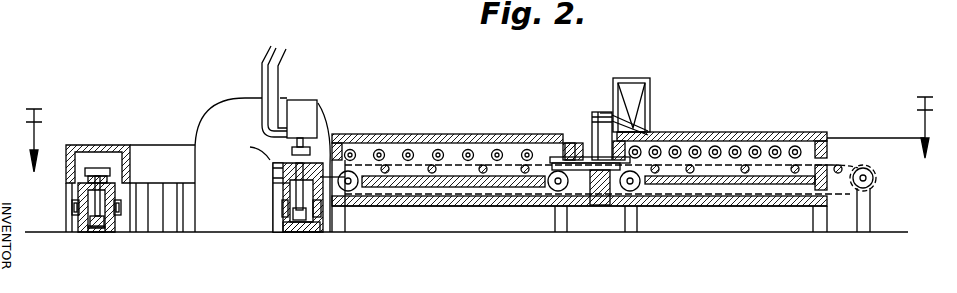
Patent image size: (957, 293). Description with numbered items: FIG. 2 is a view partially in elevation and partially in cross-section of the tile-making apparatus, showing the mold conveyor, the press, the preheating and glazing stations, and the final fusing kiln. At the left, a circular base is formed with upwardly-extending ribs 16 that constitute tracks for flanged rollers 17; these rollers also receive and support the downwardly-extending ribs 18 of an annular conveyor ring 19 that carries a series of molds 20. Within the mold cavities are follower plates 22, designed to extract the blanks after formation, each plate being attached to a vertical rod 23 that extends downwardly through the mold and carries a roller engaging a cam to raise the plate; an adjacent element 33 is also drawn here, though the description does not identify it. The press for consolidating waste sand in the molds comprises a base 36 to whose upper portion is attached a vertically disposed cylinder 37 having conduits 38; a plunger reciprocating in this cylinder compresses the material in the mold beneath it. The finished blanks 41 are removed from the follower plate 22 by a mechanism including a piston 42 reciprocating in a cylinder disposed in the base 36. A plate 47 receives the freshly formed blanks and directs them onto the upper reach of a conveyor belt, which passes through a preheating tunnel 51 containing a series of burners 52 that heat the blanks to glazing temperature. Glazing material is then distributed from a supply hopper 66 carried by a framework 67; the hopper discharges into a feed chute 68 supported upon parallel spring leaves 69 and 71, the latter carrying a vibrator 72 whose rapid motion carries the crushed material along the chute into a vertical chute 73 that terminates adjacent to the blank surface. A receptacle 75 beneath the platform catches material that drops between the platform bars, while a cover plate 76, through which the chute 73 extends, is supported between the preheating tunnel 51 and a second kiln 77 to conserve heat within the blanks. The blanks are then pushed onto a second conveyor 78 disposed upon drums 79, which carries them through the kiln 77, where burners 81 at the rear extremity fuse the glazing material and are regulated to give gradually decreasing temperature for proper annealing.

The upwardly-extending ribs 16 is at (280, 230).
The flanged rollers 17 is at (117, 213).
The downwardly-extending ribs 18 is at (83, 200).
The annular conveyor ring 19 is at (272, 183).
The molds 20 is at (112, 180).
The follower plates 22 is at (98, 180).
The vertical rod 23 is at (97, 233).
The housing 33 is at (78, 145).
The base 36 is at (212, 215).
The cylinder 37 is at (312, 108).
The conduits 38 is at (272, 82).
The blanks 41 is at (457, 166).
The piston 42 is at (246, 148).
The plate 47 is at (331, 135).
The preheating tunnel 51 is at (376, 135).
The burners 52 is at (440, 150).
The supply hopper 66 is at (632, 90).
The framework 67 is at (651, 95).
The feed chute 68 is at (603, 113).
The spring leaf 69 is at (616, 118).
The spring leaf 71 is at (650, 118).
The vibrator 72 is at (648, 128).
The vertical chute 73 is at (573, 140).
The receptacle 75 is at (594, 178).
The cover plate 76 is at (582, 142).
The second kiln 77 is at (776, 133).
The second conveyor 78 is at (728, 196).
The drums 79 is at (633, 188).
The burners 81 is at (733, 148).